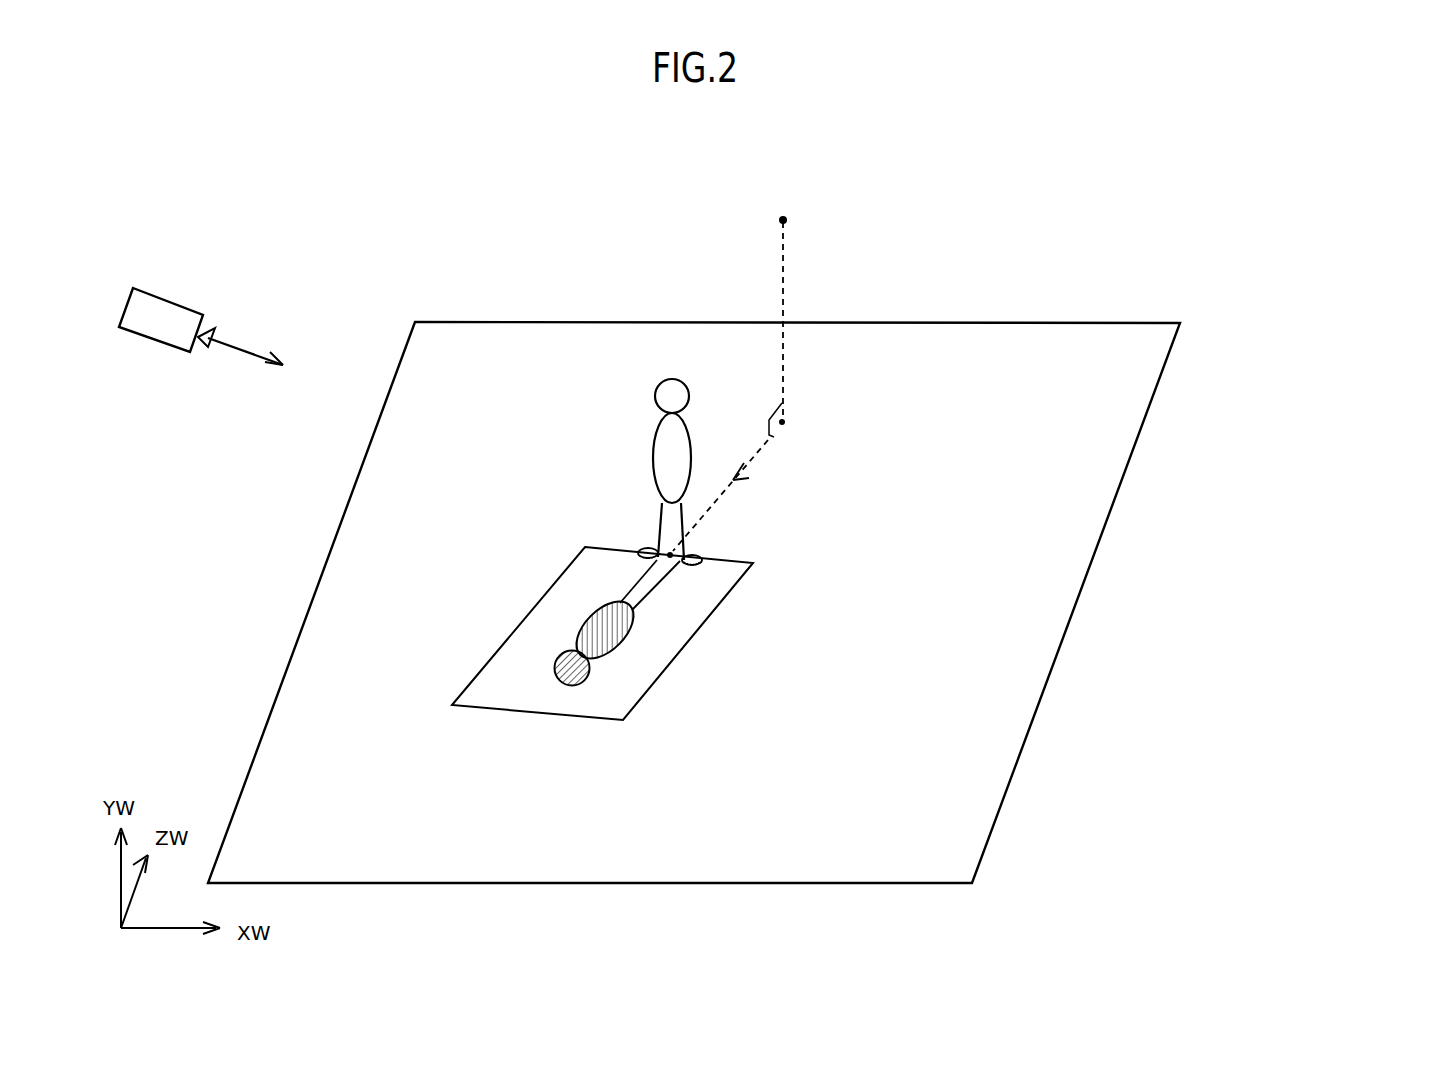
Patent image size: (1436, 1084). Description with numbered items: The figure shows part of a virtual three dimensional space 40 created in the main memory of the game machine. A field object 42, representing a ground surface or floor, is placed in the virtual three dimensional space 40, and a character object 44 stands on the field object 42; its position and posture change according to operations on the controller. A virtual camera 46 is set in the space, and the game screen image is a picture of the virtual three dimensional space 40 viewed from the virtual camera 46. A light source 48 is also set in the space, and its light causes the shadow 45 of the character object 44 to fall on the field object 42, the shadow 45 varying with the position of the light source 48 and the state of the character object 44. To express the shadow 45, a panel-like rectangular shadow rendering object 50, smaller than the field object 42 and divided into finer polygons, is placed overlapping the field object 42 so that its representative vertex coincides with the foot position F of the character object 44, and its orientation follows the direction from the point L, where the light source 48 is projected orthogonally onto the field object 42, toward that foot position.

The virtual three dimensional space 40 is at (1033, 227).
The field object 42 is at (1057, 582).
The character object 44 is at (673, 380).
The shadow 45 is at (625, 638).
The virtual camera 46 is at (170, 300).
The light source 48 is at (787, 218).
The shadow rendering object 50 is at (538, 717).